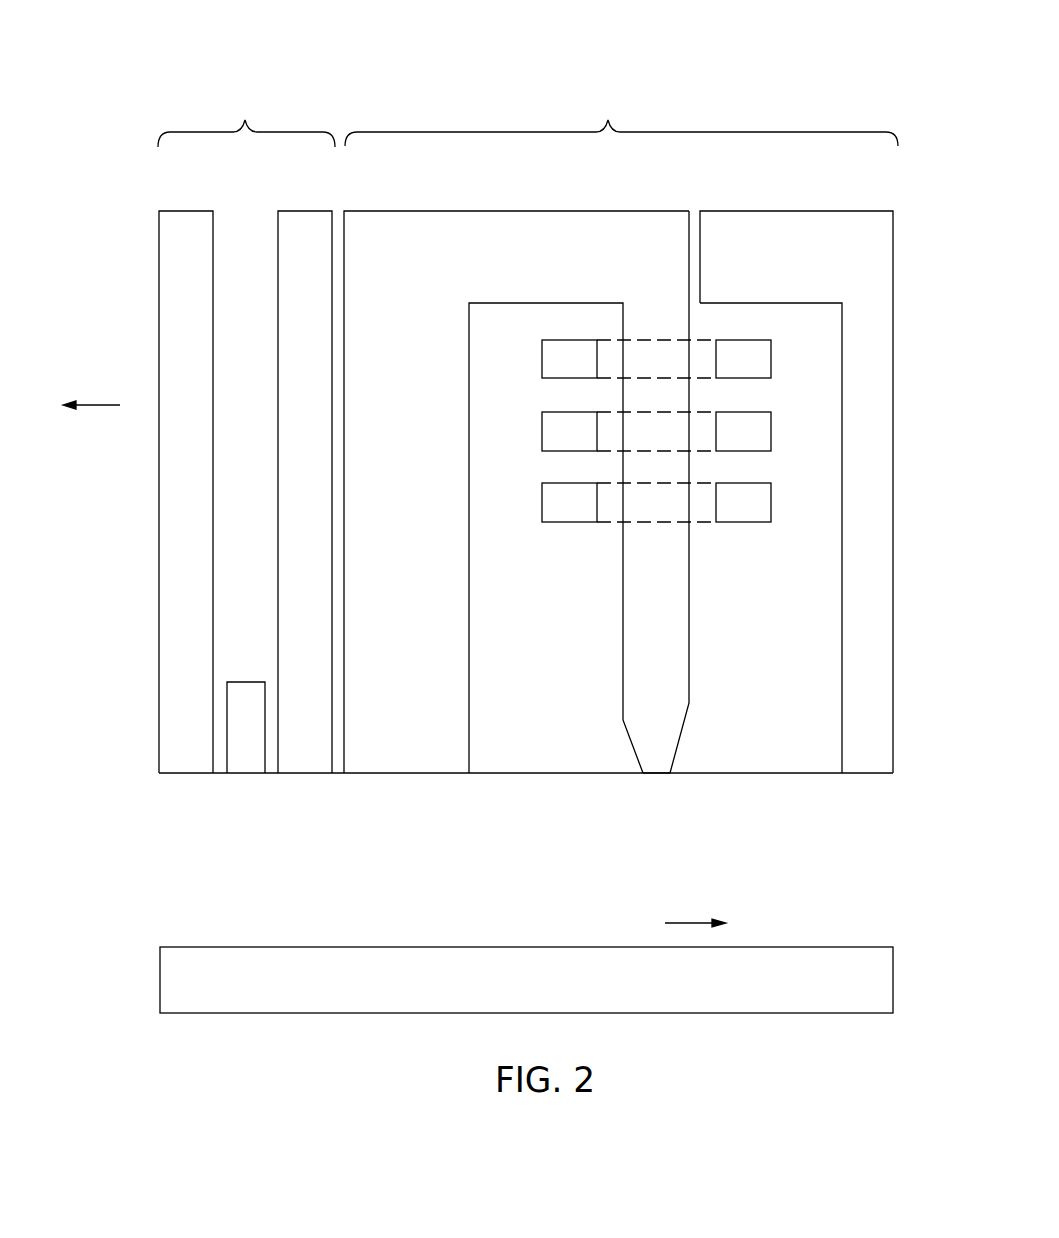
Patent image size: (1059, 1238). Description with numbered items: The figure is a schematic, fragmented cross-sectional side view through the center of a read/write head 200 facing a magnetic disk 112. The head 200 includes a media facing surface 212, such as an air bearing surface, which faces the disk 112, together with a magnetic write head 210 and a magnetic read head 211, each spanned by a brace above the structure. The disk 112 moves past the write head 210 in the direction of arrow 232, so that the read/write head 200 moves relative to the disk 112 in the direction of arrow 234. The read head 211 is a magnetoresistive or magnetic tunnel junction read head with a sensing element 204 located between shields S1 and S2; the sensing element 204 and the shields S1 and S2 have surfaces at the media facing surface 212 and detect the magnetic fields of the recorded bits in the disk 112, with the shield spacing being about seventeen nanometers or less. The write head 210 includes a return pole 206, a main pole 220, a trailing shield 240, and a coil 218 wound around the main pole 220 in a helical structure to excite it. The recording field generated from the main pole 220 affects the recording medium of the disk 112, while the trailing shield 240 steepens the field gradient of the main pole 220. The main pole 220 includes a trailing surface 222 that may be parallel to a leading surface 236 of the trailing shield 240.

The read/write head 200 is at (158, 43).
The magnetic write head 210 is at (621, 119).
The magnetic read head 211 is at (246, 120).
The MR shield S1 is at (185, 763).
The MR shield S2 is at (308, 763).
The sensing element 204 is at (247, 763).
The return pole 206 is at (408, 763).
The media facing surface 212 is at (657, 775).
The coil 218 is at (570, 523).
The main pole 220 is at (635, 733).
The trailing surface 222 is at (692, 688).
The arrow 232 is at (683, 923).
The arrow 234 is at (100, 405).
The leading surface 236 is at (842, 603).
The trailing shield 240 is at (885, 738).
The magnetic disk 112 is at (893, 980).